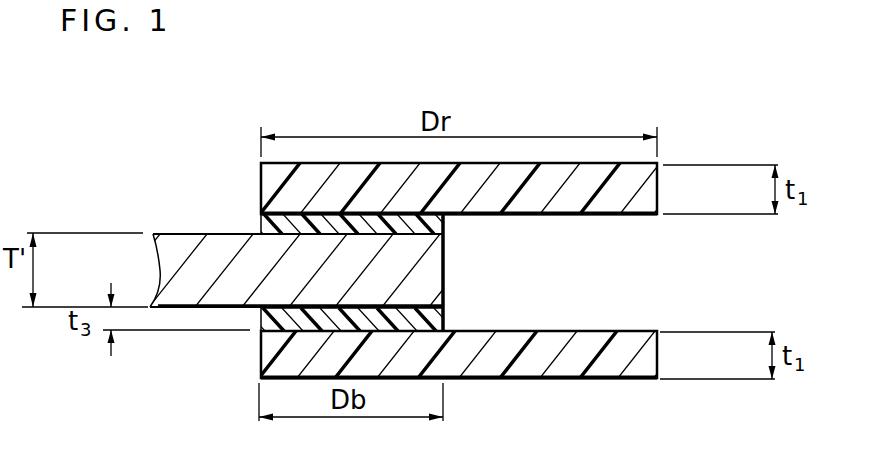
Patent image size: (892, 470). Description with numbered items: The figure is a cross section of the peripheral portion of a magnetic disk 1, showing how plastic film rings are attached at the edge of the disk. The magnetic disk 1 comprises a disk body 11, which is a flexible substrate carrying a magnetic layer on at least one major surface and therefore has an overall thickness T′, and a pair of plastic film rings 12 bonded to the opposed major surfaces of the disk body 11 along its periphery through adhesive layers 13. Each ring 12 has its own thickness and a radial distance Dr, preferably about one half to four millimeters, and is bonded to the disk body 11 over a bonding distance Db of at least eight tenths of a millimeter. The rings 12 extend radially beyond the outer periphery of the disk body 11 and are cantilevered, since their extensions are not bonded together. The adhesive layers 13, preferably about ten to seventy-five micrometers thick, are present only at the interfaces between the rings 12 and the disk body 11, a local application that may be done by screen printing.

The magnetic disk 1 is at (276, 96).
The disk body 11 is at (201, 238).
The plastic film rings 12 is at (608, 200).
The adhesive layers 13 is at (437, 222).